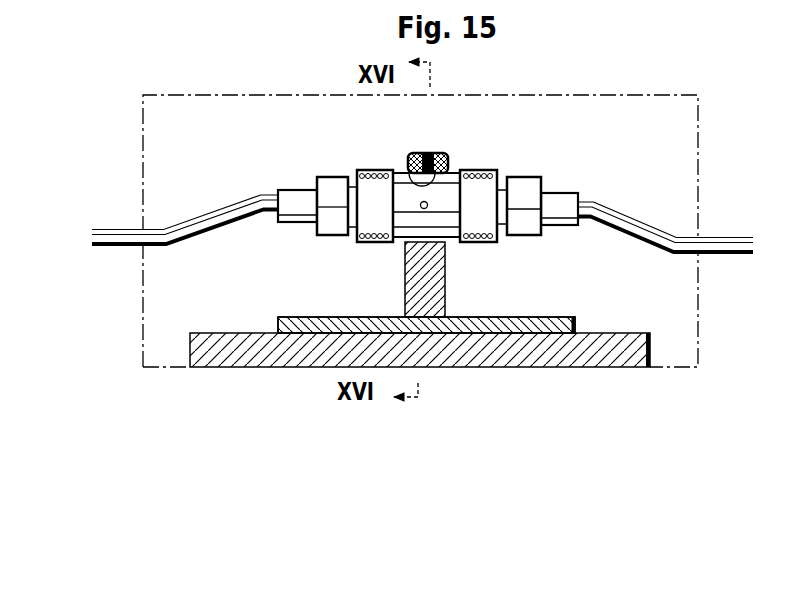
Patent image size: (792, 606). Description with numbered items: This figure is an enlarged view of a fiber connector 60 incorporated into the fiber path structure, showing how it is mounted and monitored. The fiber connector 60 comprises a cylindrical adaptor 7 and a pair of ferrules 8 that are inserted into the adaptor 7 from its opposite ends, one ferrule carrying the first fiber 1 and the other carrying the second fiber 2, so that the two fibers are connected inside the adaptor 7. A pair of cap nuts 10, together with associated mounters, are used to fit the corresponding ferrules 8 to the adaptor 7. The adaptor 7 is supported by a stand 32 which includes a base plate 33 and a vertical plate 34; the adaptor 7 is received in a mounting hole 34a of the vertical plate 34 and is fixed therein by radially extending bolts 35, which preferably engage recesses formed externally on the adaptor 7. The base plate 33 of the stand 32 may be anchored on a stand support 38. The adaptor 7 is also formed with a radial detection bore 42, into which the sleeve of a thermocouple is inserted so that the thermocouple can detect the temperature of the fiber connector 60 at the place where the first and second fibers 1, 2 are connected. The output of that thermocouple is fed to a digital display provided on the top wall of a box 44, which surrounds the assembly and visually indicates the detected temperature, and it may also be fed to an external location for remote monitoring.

The first fiber 1 is at (655, 225).
The second fiber 2 is at (203, 213).
The cylindrical adaptor 7 is at (450, 188).
The ferrules 8 is at (300, 200).
The cap nuts 10 is at (377, 170).
The stand 32 is at (455, 300).
The base plate 33 is at (287, 317).
The vertical plate 34 is at (405, 280).
The mounting hole 34a is at (403, 167).
The bolts 35 is at (447, 173).
The stand support 38 is at (605, 337).
The radial detection bore 42 is at (427, 207).
The box 44 is at (143, 287).
The fiber connector 60 is at (368, 118).